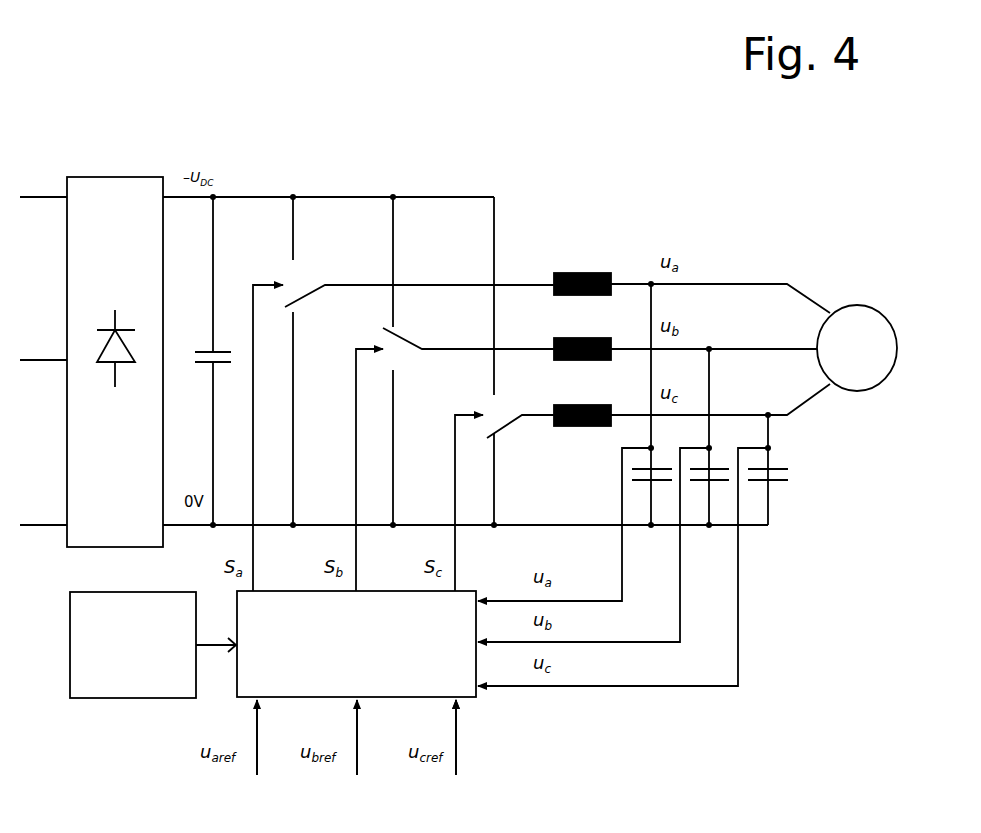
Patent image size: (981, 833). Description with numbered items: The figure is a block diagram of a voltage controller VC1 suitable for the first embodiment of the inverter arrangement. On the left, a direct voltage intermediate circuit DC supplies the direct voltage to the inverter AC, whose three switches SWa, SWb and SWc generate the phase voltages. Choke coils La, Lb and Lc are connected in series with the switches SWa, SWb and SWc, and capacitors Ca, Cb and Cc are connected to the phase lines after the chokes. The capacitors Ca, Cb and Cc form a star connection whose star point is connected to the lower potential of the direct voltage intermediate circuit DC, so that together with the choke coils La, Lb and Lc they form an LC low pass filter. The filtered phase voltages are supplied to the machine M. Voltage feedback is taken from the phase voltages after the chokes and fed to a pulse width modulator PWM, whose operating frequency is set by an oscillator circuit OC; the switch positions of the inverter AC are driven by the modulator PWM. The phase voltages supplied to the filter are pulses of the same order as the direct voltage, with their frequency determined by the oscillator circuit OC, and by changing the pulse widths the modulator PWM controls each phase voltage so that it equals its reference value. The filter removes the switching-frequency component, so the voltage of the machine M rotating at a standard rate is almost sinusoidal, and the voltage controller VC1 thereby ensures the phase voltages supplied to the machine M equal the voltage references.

The direct voltage intermediate circuit DC is at (256, 182).
The inverter AC is at (426, 182).
The switch SWa is at (305, 287).
The switch SWb is at (408, 334).
The switch SWc is at (508, 430).
The choke coil La is at (567, 272).
The choke coil Lb is at (567, 337).
The choke coil Lc is at (567, 404).
The capacitor Ca is at (640, 483).
The capacitor Cb is at (722, 486).
The capacitor Cc is at (780, 487).
The machine M is at (857, 348).
The oscillator circuit OC is at (68, 688).
The pulse width modulator PWM is at (240, 706).
The voltage controller VC1 is at (530, 723).